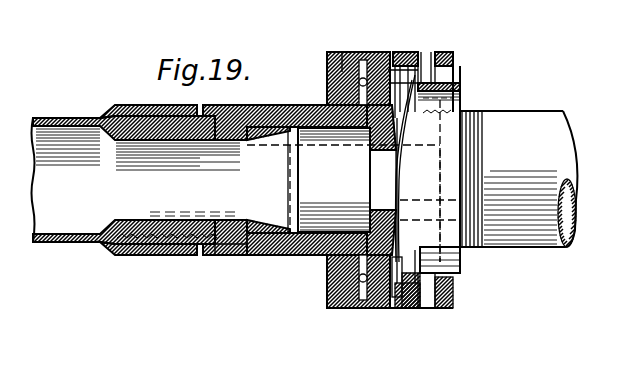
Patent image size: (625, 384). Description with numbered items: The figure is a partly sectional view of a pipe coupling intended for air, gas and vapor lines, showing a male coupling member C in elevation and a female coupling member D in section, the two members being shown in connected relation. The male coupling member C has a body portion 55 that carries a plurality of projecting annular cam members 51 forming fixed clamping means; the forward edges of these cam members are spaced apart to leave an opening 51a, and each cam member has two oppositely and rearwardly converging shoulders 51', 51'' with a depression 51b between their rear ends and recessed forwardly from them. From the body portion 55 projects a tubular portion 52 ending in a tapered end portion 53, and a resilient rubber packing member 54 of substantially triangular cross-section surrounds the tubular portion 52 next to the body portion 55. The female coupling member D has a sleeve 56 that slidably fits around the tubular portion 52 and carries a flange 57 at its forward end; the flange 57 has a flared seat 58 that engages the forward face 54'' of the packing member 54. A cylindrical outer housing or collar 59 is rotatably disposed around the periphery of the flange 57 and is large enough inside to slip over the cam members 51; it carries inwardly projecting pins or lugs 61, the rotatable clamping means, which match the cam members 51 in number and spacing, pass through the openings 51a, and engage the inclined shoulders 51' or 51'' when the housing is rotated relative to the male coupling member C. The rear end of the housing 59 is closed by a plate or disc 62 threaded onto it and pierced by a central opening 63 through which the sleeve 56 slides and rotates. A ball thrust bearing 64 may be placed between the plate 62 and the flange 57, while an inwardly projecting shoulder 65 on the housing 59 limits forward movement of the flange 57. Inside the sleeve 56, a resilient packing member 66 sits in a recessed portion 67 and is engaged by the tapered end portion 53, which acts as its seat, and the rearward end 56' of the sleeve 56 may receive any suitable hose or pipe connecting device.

The annular cam members 51 is at (424, 197).
The rearwardly converging shoulder 51' is at (462, 61).
The rearwardly converging shoulder 51'' is at (470, 260).
The opening 51a is at (423, 206).
The depression 51b is at (455, 287).
The tubular portion 52 is at (352, 181).
The tapered end portion 53 is at (272, 180).
The resilient packing member 54 is at (398, 180).
The forward face of packing member 54'' is at (357, 133).
The body portion 55 is at (413, 168).
The sleeve 56 is at (285, 253).
The rearward end of sleeve 56' is at (136, 180).
The flange 57 is at (370, 308).
The flared seat 58 is at (313, 255).
The outer housing or collar 59 is at (396, 56).
The pins or lugs 61 is at (430, 58).
The plate or disc 62 is at (328, 288).
The central opening 63 is at (358, 105).
The ball thrust bearing 64 is at (360, 80).
The inwardly projecting shoulder 65 is at (402, 308).
The resilient packing member 66 is at (247, 255).
The recessed portion 67 is at (258, 255).
The male coupling member C is at (463, 111).
The female coupling member D is at (250, 107).